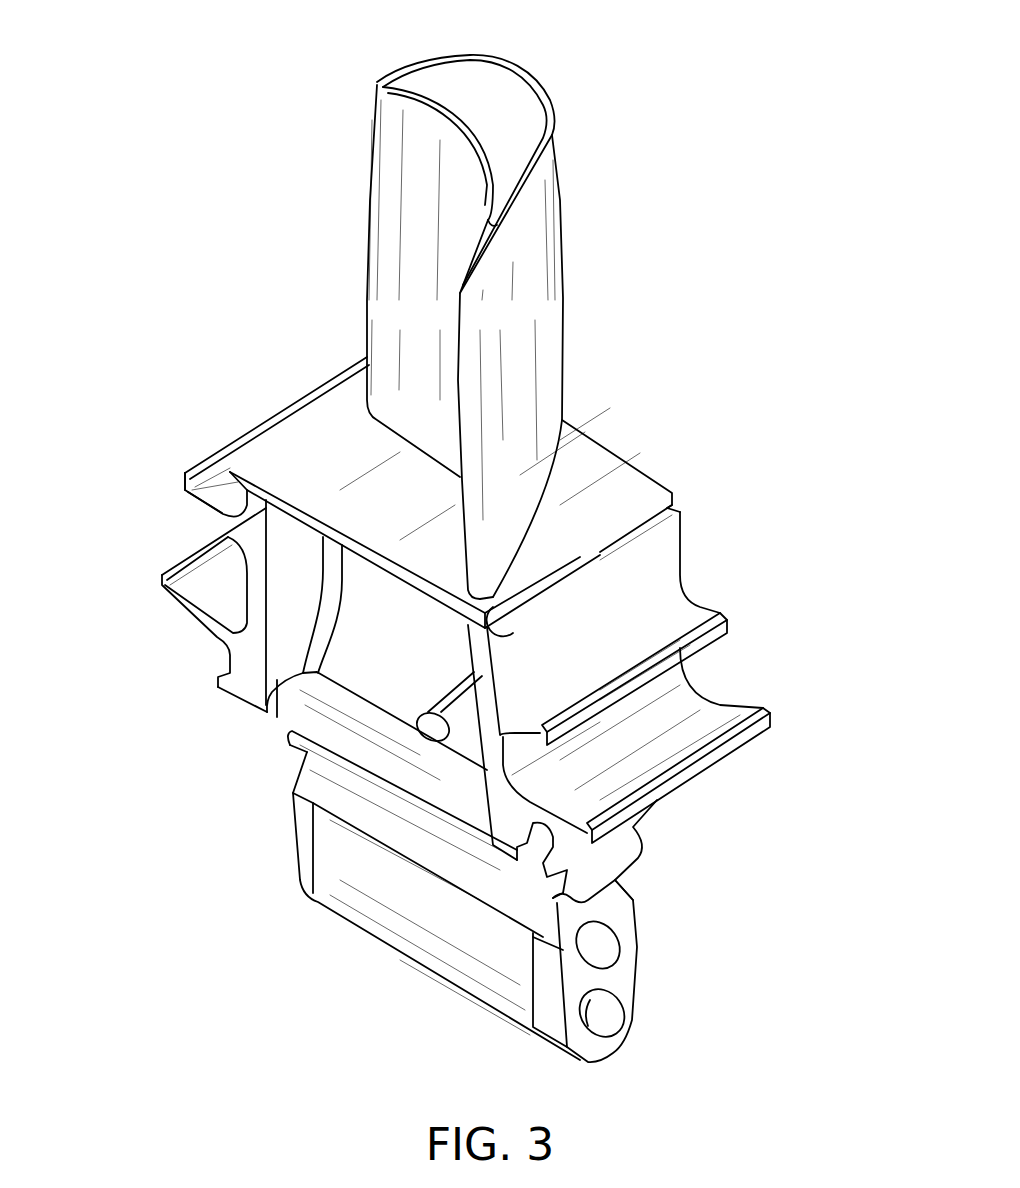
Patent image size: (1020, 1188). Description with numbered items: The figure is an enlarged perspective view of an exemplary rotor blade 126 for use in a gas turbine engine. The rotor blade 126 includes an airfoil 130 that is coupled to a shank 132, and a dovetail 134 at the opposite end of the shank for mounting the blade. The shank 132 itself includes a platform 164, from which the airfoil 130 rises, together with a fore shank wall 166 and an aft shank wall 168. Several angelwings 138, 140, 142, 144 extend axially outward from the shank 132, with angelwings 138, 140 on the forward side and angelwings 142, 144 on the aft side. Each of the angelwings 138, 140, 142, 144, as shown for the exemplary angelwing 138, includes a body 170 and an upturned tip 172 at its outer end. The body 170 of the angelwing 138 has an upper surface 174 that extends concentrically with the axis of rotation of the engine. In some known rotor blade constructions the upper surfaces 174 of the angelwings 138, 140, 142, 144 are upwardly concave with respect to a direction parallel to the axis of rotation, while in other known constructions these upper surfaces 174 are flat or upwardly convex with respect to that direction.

The rotor blade 126 is at (368, 183).
The airfoil 130 is at (543, 230).
The shank 132 is at (377, 673).
The dovetail 134 is at (380, 813).
The angelwing 138 is at (204, 460).
The angelwing 140 is at (160, 580).
The angelwing 142 is at (732, 622).
The angelwing 144 is at (773, 715).
The platform 164 is at (588, 455).
The fore shank wall 166 is at (257, 573).
The aft shank wall 168 is at (566, 622).
The body 170 is at (200, 500).
The upturned tip 172 is at (182, 482).
The upper surface 174 is at (223, 490).